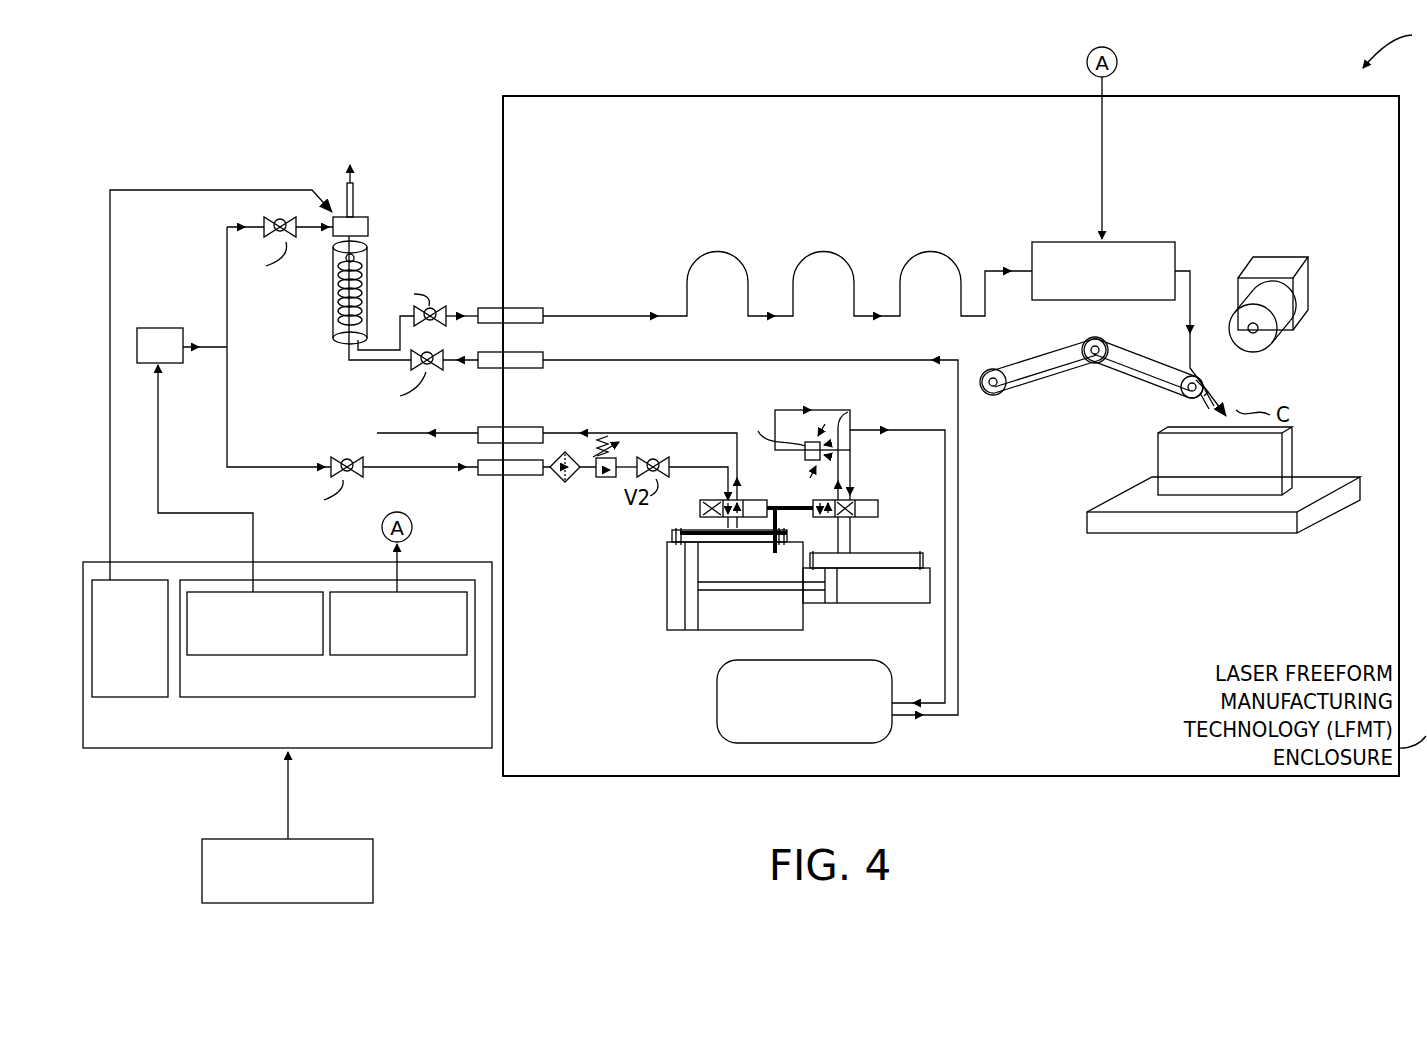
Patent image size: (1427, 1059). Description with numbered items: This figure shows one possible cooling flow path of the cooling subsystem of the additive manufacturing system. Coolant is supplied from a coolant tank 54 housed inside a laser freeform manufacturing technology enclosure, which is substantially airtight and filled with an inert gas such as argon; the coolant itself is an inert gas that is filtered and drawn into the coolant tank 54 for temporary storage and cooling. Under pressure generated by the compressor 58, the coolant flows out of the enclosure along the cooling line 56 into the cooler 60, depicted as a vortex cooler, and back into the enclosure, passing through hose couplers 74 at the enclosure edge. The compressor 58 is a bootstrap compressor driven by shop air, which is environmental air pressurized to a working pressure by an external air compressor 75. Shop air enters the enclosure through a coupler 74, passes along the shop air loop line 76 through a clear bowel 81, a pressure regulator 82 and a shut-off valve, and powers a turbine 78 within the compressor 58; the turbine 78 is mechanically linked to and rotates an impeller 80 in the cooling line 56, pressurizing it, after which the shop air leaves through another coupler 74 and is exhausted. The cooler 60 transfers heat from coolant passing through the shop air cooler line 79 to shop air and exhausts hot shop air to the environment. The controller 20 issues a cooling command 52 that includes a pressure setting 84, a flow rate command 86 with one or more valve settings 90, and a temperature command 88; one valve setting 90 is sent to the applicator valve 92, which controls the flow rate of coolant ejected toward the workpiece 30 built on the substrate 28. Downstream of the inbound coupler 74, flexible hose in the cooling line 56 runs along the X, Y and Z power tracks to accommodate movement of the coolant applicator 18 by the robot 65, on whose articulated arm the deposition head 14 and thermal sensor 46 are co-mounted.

The AM deposition head 14 is at (1168, 406).
The cooling applicator 18 is at (1247, 384).
The controller 20 is at (287, 827).
The substrate 28 is at (1223, 505).
The workpiece 30 is at (1225, 461).
The thermal sensor 46 is at (1286, 290).
The cooling command 52 is at (287, 655).
The coolant tank 54 is at (804, 701).
The cooling line 56 is at (787, 460).
The compressor 58 is at (736, 639).
The cooler 60 is at (359, 273).
The robot 65 is at (1091, 352).
The hose couplers 74 is at (515, 365).
The external air compressor 75 is at (182, 319).
The shop air loop line 76 is at (541, 450).
The turbine 78 is at (752, 499).
The shop air cooler line 79 is at (350, 360).
The impeller 80 is at (864, 512).
The clear bowel 81 is at (565, 493).
The pressure regulator 82 is at (605, 498).
The pressure setting 84 is at (255, 623).
The flow rate command 86 is at (327, 638).
The temperature command 88 is at (130, 638).
The valve setting 90 is at (398, 623).
The applicator valve 92 is at (1129, 329).